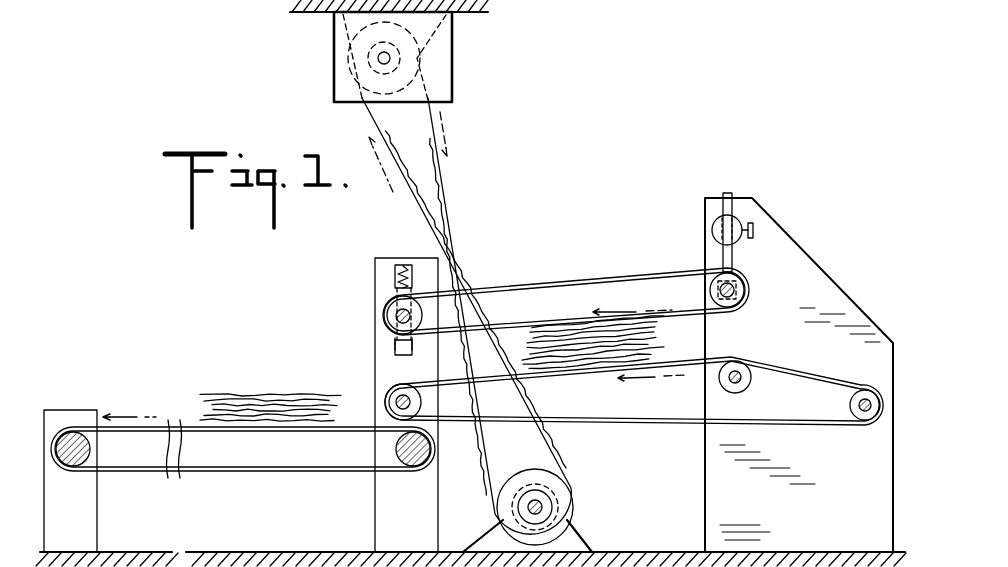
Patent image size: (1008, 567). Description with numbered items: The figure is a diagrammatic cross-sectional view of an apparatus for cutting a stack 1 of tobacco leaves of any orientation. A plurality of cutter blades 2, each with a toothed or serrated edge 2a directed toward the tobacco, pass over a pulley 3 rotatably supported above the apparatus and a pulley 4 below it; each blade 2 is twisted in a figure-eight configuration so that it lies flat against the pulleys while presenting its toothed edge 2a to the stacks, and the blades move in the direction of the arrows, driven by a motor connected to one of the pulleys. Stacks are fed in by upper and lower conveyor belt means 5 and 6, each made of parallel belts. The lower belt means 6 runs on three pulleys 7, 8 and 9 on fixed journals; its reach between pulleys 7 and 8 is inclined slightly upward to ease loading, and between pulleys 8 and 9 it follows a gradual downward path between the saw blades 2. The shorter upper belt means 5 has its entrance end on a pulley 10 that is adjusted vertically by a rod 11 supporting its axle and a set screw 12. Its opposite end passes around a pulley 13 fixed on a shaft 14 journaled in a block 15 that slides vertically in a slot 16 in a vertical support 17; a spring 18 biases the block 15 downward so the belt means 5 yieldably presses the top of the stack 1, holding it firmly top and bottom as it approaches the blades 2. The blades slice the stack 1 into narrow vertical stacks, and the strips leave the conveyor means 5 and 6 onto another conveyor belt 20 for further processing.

The stack 1 is at (660, 350).
The cutter blade 2 is at (445, 152).
The toothed edge 2a is at (460, 218).
The pulley 3 is at (440, 57).
The pulley 4 is at (557, 500).
The upper conveyor belt means 5 is at (609, 284).
The lower conveyor belt means 6 is at (775, 421).
The pulley 7 is at (865, 411).
The pulley 8 is at (739, 380).
The pulley 9 is at (402, 400).
The pulley 10 is at (746, 291).
The rod 11 is at (728, 204).
The set screw 12 is at (753, 228).
The pulley 13 is at (386, 311).
The shaft 14 is at (398, 318).
The block 15 is at (394, 345).
The slot 16 is at (410, 353).
The vertical support 17 is at (375, 270).
The spring 18 is at (405, 264).
The conveyor belt 20 is at (272, 468).